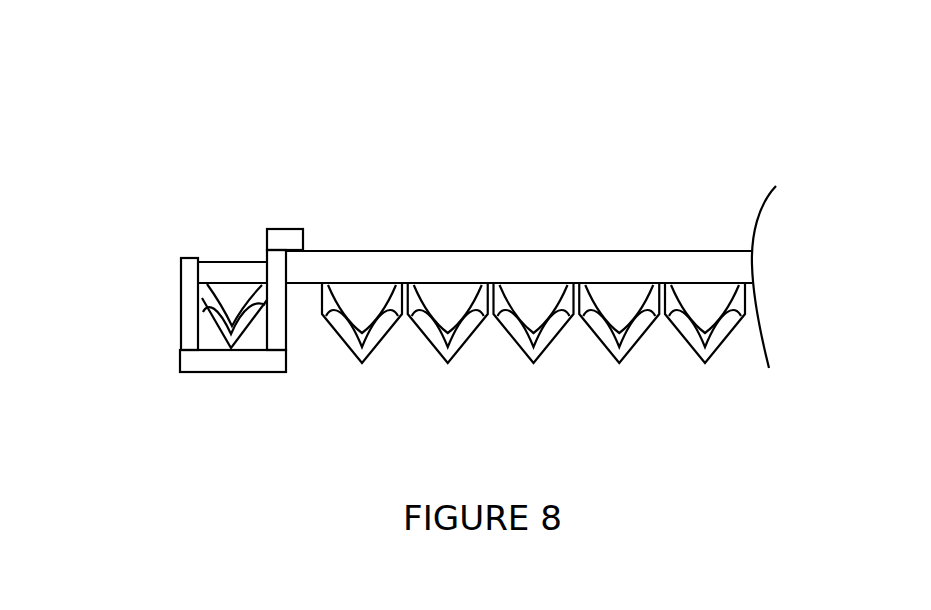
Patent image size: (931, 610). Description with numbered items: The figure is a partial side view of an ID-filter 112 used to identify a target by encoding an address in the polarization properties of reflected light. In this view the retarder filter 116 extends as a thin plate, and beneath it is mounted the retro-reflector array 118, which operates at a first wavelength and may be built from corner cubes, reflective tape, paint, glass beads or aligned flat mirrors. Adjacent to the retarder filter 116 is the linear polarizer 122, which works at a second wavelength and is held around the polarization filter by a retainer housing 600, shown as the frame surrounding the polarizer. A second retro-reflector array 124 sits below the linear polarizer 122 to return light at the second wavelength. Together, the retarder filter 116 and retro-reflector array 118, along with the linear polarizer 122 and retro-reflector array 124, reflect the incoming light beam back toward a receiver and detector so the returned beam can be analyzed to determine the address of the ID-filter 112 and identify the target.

The ID-filter 112 is at (665, 98).
The retarder filter 116 is at (542, 262).
The retro-reflector array 118 is at (487, 318).
The linear polarizer 122 is at (213, 262).
The retro-reflector array 124 is at (209, 366).
The retainer housing 600 is at (276, 262).